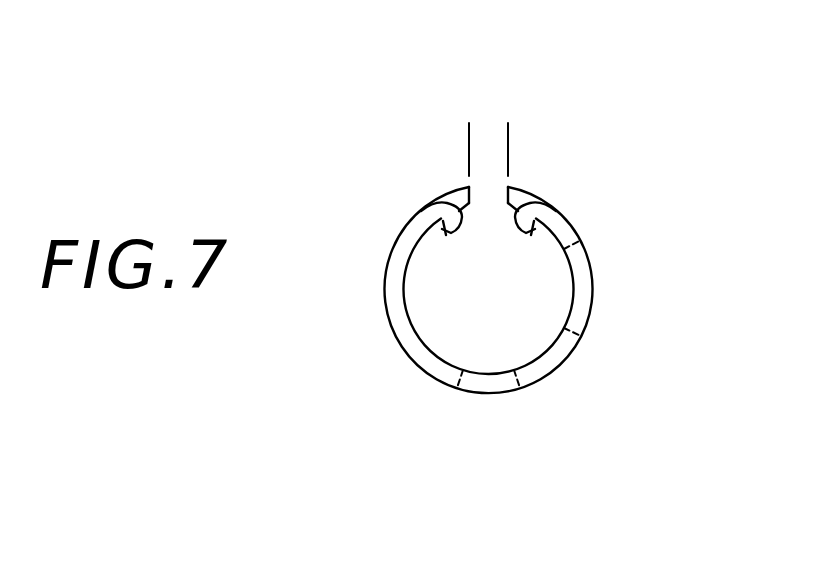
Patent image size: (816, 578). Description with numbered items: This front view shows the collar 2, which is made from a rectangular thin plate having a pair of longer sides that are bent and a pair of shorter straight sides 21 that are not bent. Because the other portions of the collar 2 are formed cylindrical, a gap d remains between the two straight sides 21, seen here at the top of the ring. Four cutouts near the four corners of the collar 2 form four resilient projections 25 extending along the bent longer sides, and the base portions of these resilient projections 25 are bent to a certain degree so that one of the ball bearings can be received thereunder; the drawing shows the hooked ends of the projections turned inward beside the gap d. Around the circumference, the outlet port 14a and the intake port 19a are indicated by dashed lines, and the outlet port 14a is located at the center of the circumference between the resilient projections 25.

The collar 2 is at (590, 345).
The straight sides 21 is at (477, 189).
The resilient projections 25 is at (444, 224).
The intake port 19a is at (578, 292).
The outlet port 14a is at (485, 393).
The gap d is at (393, 151).